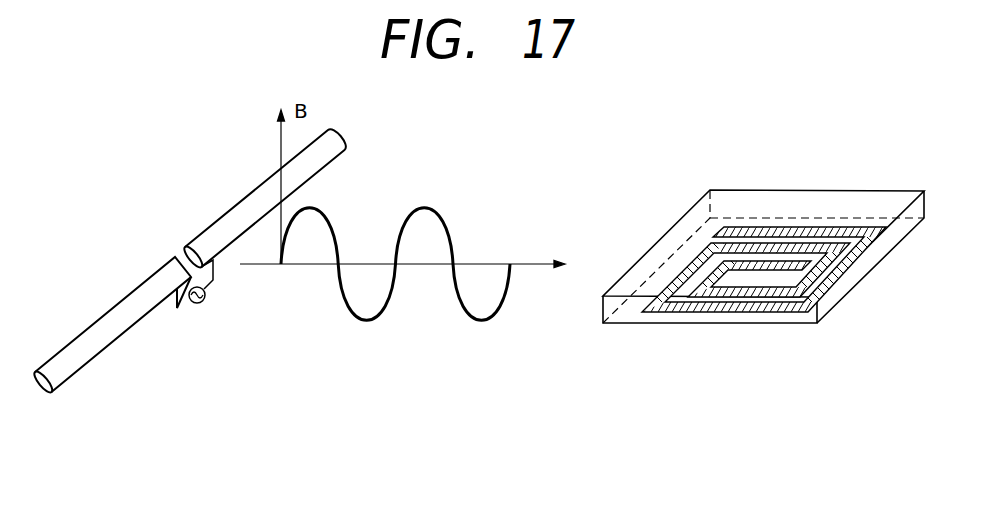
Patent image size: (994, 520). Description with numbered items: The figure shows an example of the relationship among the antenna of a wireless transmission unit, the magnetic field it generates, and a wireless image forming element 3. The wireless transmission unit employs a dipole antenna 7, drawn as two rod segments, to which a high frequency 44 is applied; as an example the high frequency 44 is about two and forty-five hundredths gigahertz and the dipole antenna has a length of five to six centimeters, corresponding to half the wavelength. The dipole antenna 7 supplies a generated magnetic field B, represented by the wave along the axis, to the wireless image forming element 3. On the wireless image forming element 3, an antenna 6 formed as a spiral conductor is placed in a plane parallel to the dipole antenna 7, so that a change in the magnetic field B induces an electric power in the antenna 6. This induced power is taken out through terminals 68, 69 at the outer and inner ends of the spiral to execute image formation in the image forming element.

The dipole antenna 7 is at (130, 302).
The high frequency 44 is at (197, 303).
The wireless image forming element 3 is at (862, 272).
The antenna 6 is at (751, 227).
The terminal 68 is at (738, 226).
The terminal 69 is at (800, 262).